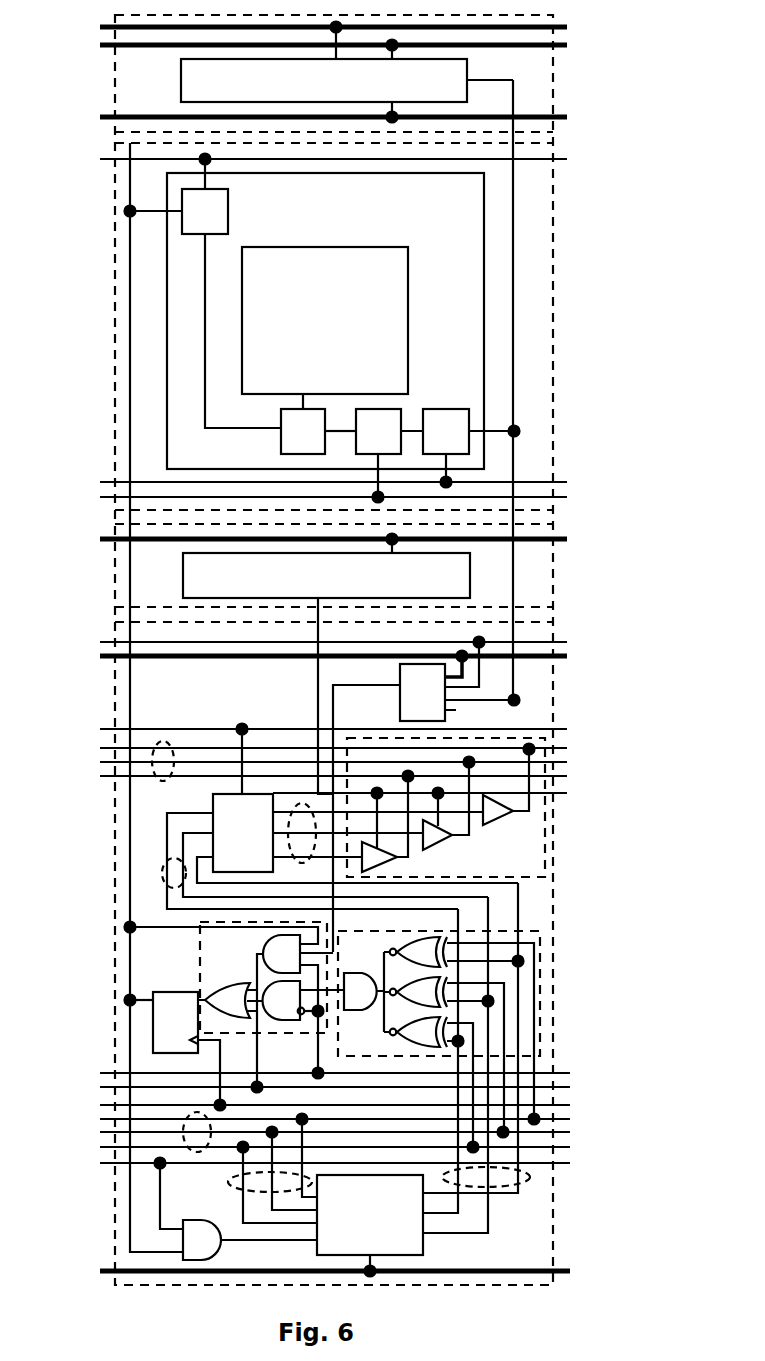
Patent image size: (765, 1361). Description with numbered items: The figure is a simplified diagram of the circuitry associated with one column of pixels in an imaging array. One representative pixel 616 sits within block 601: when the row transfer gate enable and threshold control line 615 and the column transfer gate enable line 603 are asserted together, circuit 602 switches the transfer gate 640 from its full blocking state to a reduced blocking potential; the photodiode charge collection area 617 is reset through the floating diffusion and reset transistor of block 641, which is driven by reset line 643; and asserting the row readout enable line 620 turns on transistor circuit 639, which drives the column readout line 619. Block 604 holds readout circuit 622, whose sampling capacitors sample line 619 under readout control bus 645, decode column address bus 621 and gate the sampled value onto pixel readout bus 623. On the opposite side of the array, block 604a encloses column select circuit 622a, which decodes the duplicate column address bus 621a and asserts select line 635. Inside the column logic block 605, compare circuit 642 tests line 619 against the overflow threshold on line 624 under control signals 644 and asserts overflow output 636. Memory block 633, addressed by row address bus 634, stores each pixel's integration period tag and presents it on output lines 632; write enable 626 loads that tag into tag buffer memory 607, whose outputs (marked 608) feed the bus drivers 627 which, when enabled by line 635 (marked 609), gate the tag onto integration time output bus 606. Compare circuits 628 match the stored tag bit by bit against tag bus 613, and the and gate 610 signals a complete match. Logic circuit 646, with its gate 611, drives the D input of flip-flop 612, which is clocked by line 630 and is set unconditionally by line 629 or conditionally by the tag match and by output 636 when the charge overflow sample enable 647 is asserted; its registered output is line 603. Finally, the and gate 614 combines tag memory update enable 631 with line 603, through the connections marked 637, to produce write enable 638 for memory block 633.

The representative pixel block 601 is at (115, 143).
The transfer gate switching circuit 602 is at (176, 180).
The column transfer gate enable line 603 is at (120, 365).
The readout block 604 is at (108, 14).
The second current source unit 604a is at (115, 524).
The control unit 605 is at (115, 622).
The integration time output bus 606 is at (152, 742).
The tag buffer memory 607 is at (210, 794).
The decoder output lines 608 is at (290, 824).
The feedback lines 609 is at (167, 870).
The and gate 610 is at (373, 940).
The OR gate 611 is at (232, 984).
The D type flip-flop 612 is at (148, 990).
The integration period tag bus 613 is at (188, 1122).
The and gate 614 is at (178, 1216).
The row transfer gate enable and threshold control line 615 is at (566, 157).
The pixel 616 is at (487, 170).
The pixel charge collection area 617 is at (412, 240).
The column readout line 619 is at (520, 454).
The row readout enable line 620 is at (566, 480).
The column address bus 621 is at (570, 48).
The duplicate column address bus 621a is at (566, 536).
The pixel readout circuit 622 is at (473, 53).
The column select circuit 622a is at (476, 553).
The pixel readout bus 623 is at (567, 120).
The charge overflow detection threshold signal 624 is at (566, 640).
The row buffer memory write enable 626 is at (566, 727).
The bus drivers 627 is at (566, 746).
The compare circuits 628 is at (553, 930).
The unconditional pixel transfer gate enable 629 is at (572, 1085).
The transfer gate enable flip-flop clock 630 is at (572, 1103).
The tag memory update enable 631 is at (572, 1147).
The memory output lines 632 is at (530, 1176).
The memory block 633 is at (425, 1235).
The row address bus 634 is at (572, 1268).
The select line 635 is at (312, 712).
The charge overflow detection output 636 is at (340, 680).
The reset line 637 is at (228, 1178).
The write enable output 638 is at (312, 1245).
The transistor circuit 639 is at (462, 406).
The transfer gate 640 is at (280, 416).
The floating diffusion readout node and reset transistor block 641 is at (348, 456).
The charge overflow detection threshold compare circuit 642 is at (452, 718).
The floating diffusion reset line 643 is at (566, 495).
The compare circuit control signals 644 is at (566, 658).
The readout control bus 645 is at (567, 30).
The logic circuit 646 is at (198, 920).
The charge overflow sample enable 647 is at (572, 1070).